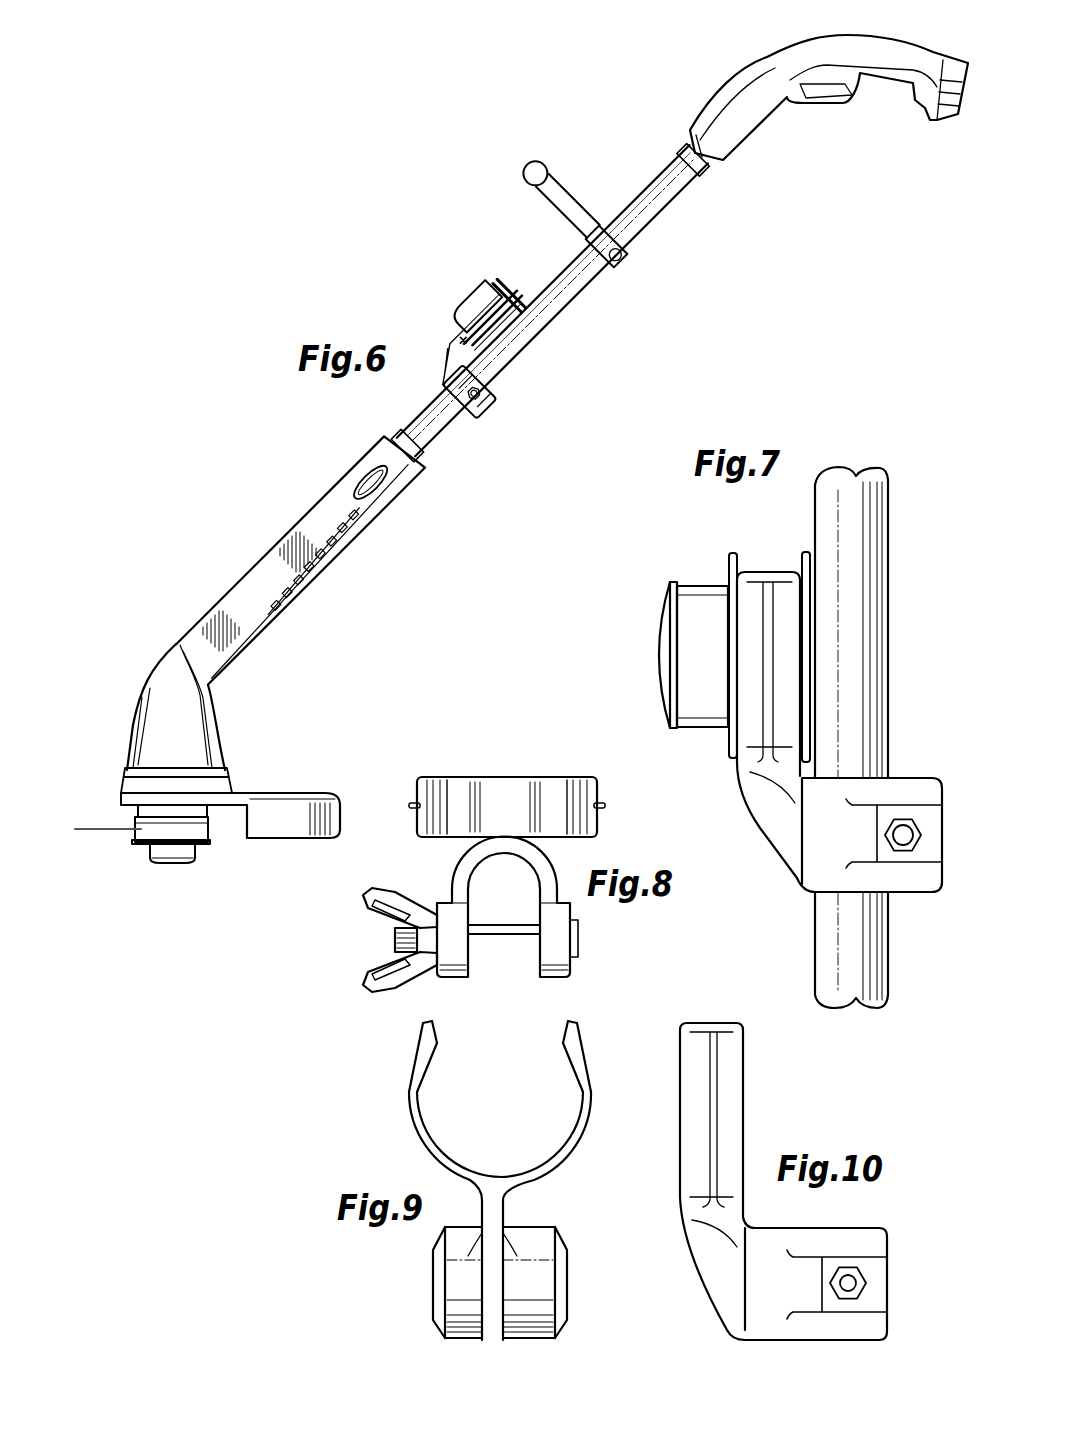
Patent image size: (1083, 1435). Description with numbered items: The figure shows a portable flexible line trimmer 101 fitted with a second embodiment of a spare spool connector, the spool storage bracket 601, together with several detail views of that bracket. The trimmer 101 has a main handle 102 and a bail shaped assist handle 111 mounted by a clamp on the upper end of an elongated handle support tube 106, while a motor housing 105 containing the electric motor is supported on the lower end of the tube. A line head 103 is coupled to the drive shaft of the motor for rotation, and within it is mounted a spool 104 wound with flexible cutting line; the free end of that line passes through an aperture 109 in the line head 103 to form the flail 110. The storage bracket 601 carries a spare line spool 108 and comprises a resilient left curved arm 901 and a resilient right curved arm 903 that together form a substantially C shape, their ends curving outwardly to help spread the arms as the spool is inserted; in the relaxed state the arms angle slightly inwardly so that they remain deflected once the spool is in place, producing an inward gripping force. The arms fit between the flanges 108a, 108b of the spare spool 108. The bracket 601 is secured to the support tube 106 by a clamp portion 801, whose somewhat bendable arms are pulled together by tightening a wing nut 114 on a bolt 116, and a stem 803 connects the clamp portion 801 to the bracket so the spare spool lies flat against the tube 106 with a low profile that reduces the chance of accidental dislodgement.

In FIG. 6, the flexible line trimmer 101 is at (395, 219).
In FIG. 6, the main handle 102 is at (763, 58).
In FIG. 6, the line head 103 is at (208, 830).
In FIG. 6, the spool 104 is at (197, 849).
In FIG. 6, the motor housing 105 is at (225, 591).
In FIG. 6, the handle support tube 106 is at (572, 295).
In FIG. 6, the spare line spool 108 is at (487, 283).
In FIG. 7, the spare line spool 108 is at (656, 672).
In FIG. 7, the flange 108a is at (729, 557).
In FIG. 7, the flange 108b is at (802, 557).
In FIG. 6, the aperture 109 is at (160, 847).
In FIG. 6, the flail 110 is at (110, 833).
In FIG. 6, the assist handle 111 is at (540, 163).
In FIG. 8, the wing nut 114 is at (395, 893).
In FIG. 8, the bolt 116 is at (512, 943).
In FIG. 6, the spool storage bracket 601 is at (461, 340).
In FIG. 6, the clamp portion 801 is at (443, 390).
In FIG. 7, the clamp portion 801 is at (903, 792).
In FIG. 8, the clamp portion 801 is at (572, 920).
In FIG. 9, the clamp portion 801 is at (530, 1330).
In FIG. 10, the clamp portion 801 is at (772, 1317).
In FIG. 7, the stem 803 is at (775, 817).
In FIG. 9, the stem 803 is at (502, 1213).
In FIG. 10, the stem 803 is at (720, 1273).
In FIG. 8, the left curved arm 901 is at (590, 790).
In FIG. 9, the left curved arm 901 is at (405, 1100).
In FIG. 7, the right curved arm 903 is at (750, 697).
In FIG. 8, the right curved arm 903 is at (420, 790).
In FIG. 9, the right curved arm 903 is at (597, 1100).
In FIG. 10, the right curved arm 903 is at (735, 1080).